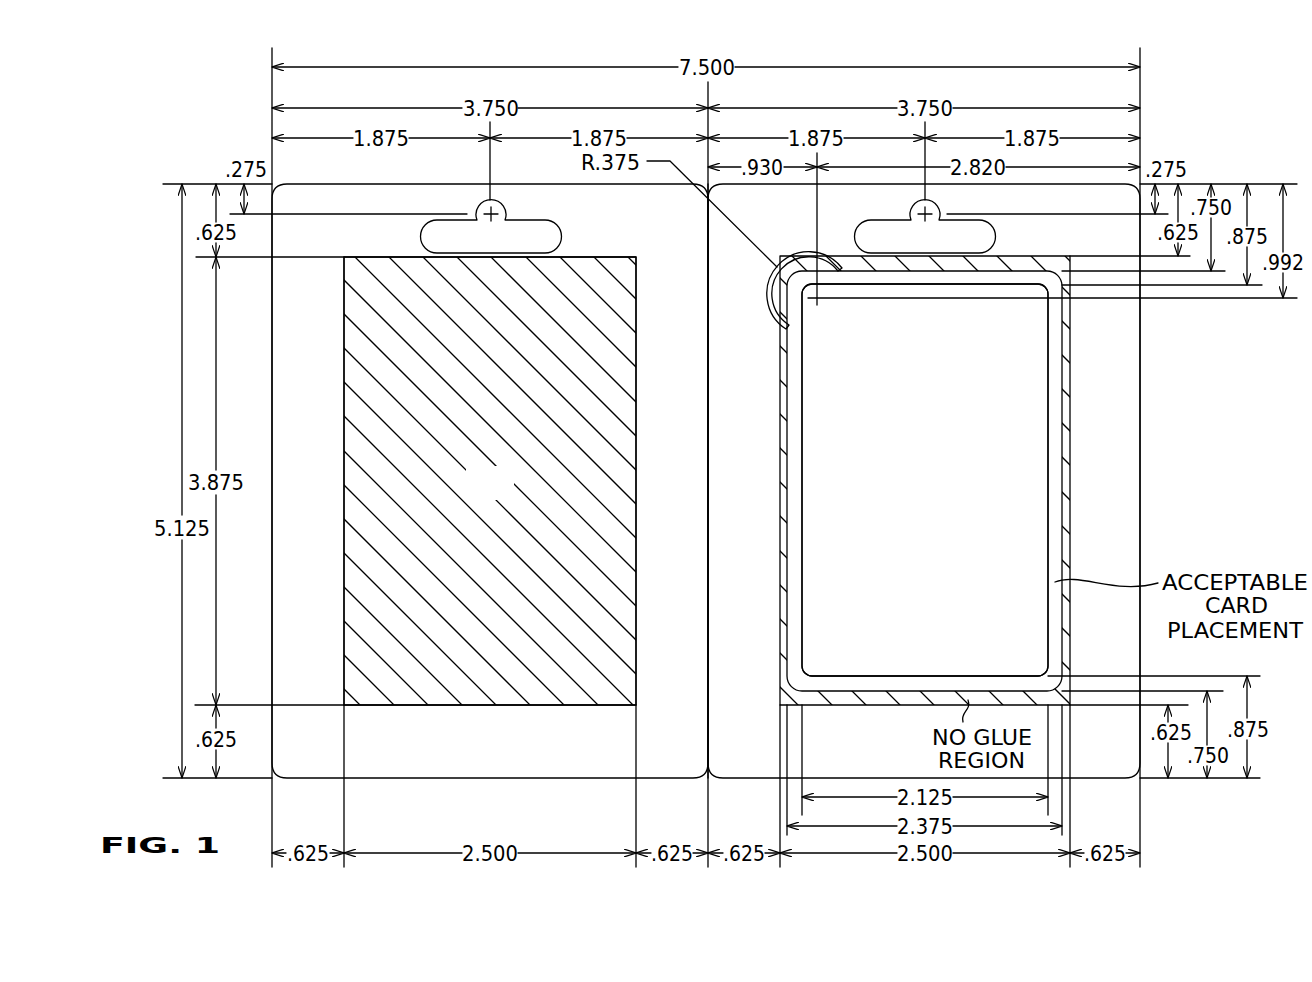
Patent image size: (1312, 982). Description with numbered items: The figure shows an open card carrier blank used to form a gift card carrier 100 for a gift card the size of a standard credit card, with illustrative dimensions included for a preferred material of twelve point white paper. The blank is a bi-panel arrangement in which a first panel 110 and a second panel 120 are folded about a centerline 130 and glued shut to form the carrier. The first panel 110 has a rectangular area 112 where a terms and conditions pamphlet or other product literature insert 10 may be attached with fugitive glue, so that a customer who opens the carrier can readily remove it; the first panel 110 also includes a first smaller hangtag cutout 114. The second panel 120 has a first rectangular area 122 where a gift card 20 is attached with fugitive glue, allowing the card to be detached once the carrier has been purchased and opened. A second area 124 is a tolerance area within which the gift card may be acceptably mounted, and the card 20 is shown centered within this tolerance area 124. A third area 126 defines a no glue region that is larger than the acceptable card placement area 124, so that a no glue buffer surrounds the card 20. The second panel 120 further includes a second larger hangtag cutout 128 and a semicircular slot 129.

The gift card carrier 100 is at (1205, 108).
The product literature insert 10 is at (508, 493).
The gift card 20 is at (942, 493).
The first panel 110 is at (425, 753).
The rectangular area 112 is at (344, 475).
The first smaller hangtag cutout 114 is at (477, 205).
The second panel 120 is at (886, 755).
The first rectangular area 122 is at (1062, 382).
The second area 124 is at (1062, 432).
The third area 126 is at (1062, 522).
The second larger hangtag cutout 128 is at (911, 205).
The semicircular slot 129 is at (768, 291).
The centerline 130 is at (708, 220).